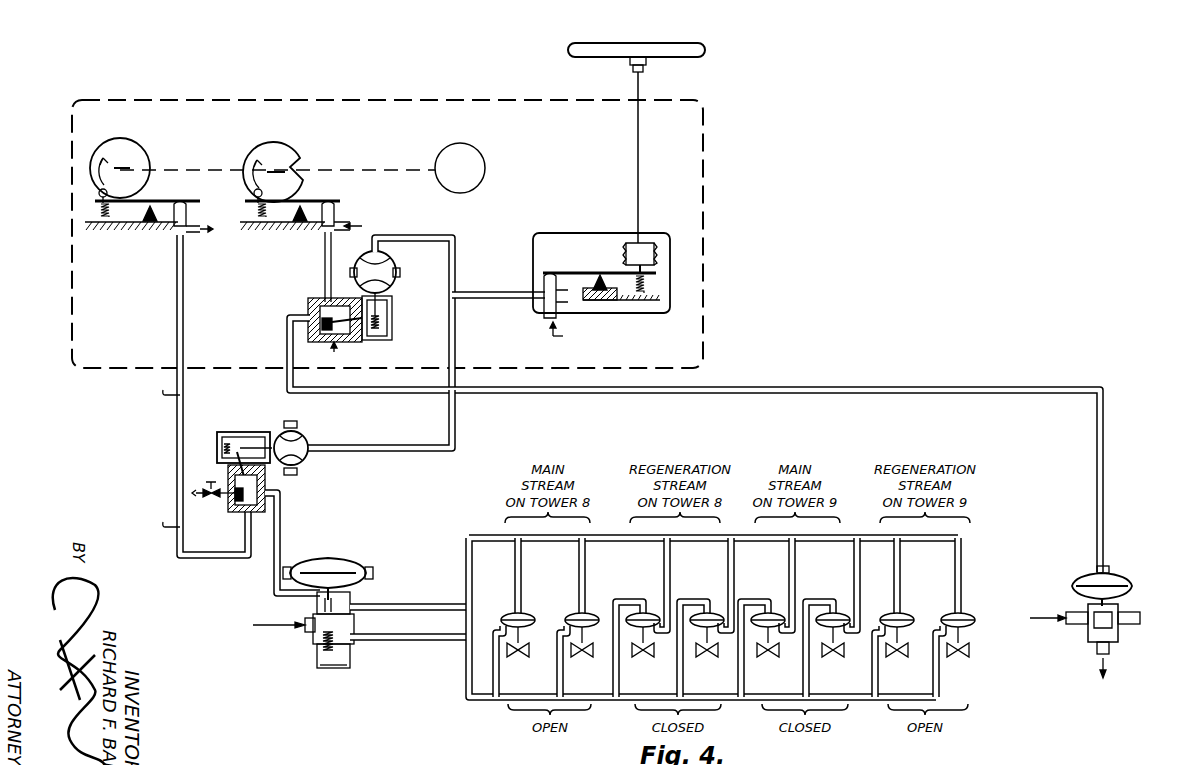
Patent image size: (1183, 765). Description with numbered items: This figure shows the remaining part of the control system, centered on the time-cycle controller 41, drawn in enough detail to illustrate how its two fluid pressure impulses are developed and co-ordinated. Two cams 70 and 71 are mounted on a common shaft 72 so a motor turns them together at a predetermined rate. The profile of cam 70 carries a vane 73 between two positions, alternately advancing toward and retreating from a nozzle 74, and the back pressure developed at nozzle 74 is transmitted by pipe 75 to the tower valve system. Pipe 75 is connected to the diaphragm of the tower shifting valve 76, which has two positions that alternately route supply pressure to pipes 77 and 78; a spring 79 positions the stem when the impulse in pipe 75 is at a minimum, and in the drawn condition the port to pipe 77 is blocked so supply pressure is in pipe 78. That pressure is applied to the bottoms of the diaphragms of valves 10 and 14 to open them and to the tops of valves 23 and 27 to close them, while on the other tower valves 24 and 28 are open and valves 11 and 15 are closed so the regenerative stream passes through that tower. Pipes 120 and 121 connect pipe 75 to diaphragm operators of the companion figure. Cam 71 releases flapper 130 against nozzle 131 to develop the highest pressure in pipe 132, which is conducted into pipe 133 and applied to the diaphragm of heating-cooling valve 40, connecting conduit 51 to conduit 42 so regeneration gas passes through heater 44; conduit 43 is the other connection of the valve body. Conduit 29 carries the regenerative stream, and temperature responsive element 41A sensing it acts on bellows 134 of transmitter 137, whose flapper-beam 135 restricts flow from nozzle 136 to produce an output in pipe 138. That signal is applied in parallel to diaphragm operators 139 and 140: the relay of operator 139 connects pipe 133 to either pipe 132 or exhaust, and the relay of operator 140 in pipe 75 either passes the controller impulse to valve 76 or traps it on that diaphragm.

The conduit 29 is at (665, 46).
The temperature responsive element 41A is at (642, 62).
The time-cycle controller 41 is at (308, 100).
The cam 70 is at (128, 160).
The cam 71 is at (282, 160).
The common shaft 72 is at (184, 170).
The vane 73 is at (160, 201).
The nozzle 74 is at (174, 230).
The flapper 130 is at (328, 203).
The nozzle 131 is at (322, 232).
The pipe 132 is at (320, 285).
The pipe 133 is at (790, 386).
The bellows 134 is at (656, 256).
The flapper-beam 135 is at (548, 272).
The nozzle 136 is at (560, 305).
The transmitter 137 is at (598, 233).
The pipe 138 is at (466, 296).
The diaphragm operator 139 is at (392, 262).
The diaphragm operator 140 is at (300, 433).
The pipe 120 is at (185, 395).
The pipe 121 is at (158, 520).
The pipe 75 is at (281, 552).
The valve 76 is at (316, 605).
The pipe 77 is at (394, 606).
The pipe 78 is at (426, 646).
The spring 79 is at (318, 656).
The tower valve 10 is at (525, 612).
The tower valve 14 is at (587, 612).
The tower valve 23 is at (648, 612).
The tower valve 27 is at (712, 612).
The tower valve 11 is at (778, 612).
The tower valve 15 is at (843, 612).
The tower valve 24 is at (903, 612).
The tower valve 28 is at (964, 612).
The heating-cooling valve 40 is at (1120, 582).
The conduit 42 is at (1112, 646).
The outlet 43 is at (1135, 613).
The conduit 51 is at (1068, 626).
The heater 44 is at (1087, 675).